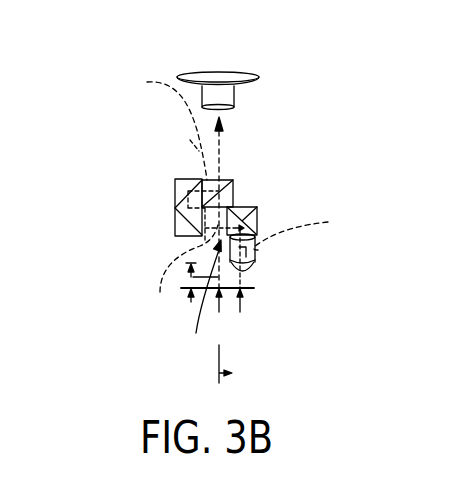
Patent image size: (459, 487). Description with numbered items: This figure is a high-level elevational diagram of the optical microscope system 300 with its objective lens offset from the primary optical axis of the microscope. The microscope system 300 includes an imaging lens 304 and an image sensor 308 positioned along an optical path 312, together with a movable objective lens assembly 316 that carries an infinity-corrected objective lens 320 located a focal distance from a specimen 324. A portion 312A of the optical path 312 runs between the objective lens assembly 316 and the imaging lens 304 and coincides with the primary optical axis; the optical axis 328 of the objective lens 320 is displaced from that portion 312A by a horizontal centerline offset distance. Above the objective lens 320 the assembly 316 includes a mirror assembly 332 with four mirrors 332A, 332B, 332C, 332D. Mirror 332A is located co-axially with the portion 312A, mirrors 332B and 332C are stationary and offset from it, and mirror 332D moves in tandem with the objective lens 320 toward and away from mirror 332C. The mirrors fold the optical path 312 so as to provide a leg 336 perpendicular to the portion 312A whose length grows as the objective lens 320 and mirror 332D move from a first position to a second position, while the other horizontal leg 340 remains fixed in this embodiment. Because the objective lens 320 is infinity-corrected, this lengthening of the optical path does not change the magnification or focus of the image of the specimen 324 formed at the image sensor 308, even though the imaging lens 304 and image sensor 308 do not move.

The optical microscope system 300 is at (92, 81).
The imaging lens 304 is at (235, 106).
The image sensor 308 is at (244, 72).
The optical path 312 is at (232, 145).
The portion of optical path 312A is at (154, 125).
The movable objective lens assembly 316 is at (130, 262).
The infinity-corrected objective lens 320 is at (259, 263).
The specimen 324 is at (254, 288).
The optical axis of the objective lens 328 is at (305, 229).
The mirror assembly 332 is at (188, 177).
The mirror 332A is at (233, 186).
The mirror 332B is at (176, 183).
The mirror 332C is at (177, 226).
The mirror 332D is at (256, 210).
The leg of optical path 336 is at (181, 271).
The other horizontal leg 340 is at (180, 134).